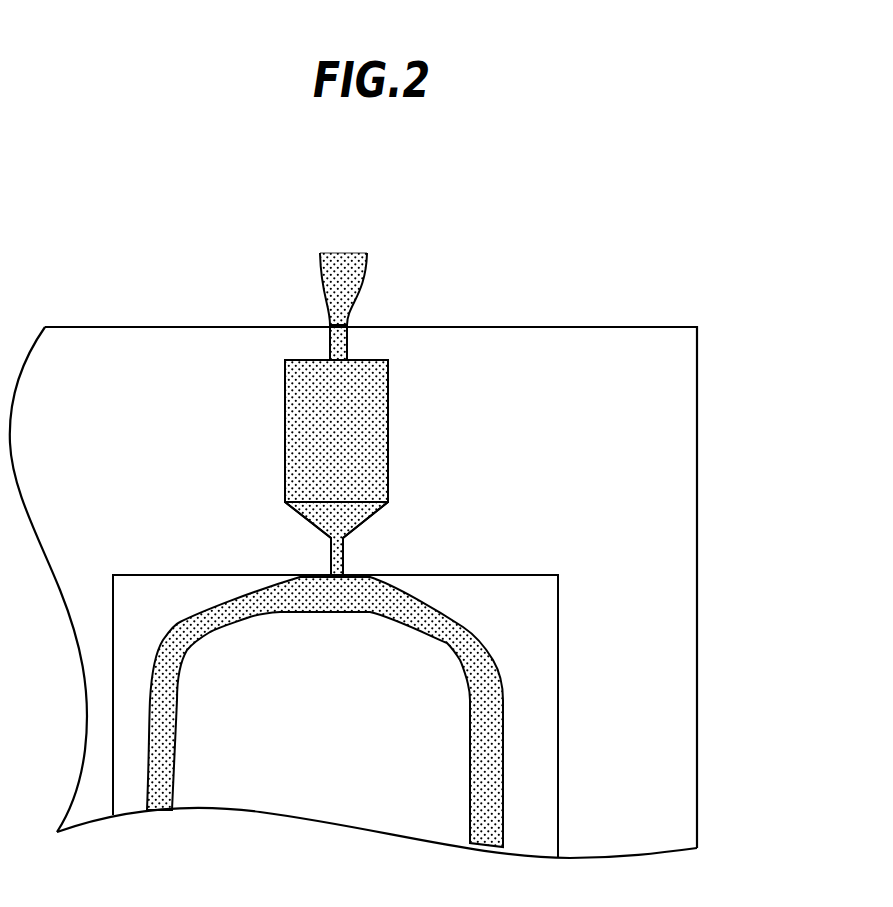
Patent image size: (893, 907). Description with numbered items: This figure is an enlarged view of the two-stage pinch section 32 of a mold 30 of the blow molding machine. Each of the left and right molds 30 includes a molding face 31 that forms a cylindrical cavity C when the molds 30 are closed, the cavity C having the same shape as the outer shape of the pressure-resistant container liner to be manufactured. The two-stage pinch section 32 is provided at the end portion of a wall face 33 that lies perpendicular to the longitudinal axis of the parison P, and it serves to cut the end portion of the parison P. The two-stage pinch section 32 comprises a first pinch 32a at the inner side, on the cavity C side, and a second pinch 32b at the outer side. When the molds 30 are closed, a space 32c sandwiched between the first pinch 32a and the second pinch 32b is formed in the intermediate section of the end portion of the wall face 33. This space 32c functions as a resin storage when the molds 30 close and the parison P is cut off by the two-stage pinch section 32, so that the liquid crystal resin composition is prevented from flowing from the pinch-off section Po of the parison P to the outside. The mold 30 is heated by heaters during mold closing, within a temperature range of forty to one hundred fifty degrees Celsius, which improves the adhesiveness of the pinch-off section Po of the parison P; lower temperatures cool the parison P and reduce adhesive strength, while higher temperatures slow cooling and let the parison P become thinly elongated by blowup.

The mold 30 is at (724, 352).
The molding face 31 is at (115, 600).
The two-stage pinch section 32 is at (339, 415).
The first pinch 32a is at (332, 551).
The second pinch 32b is at (330, 348).
The space 32c is at (381, 470).
The wall face 33 is at (181, 348).
The cavity C is at (545, 743).
The parison P is at (172, 760).
The pinch-off section Po is at (337, 598).